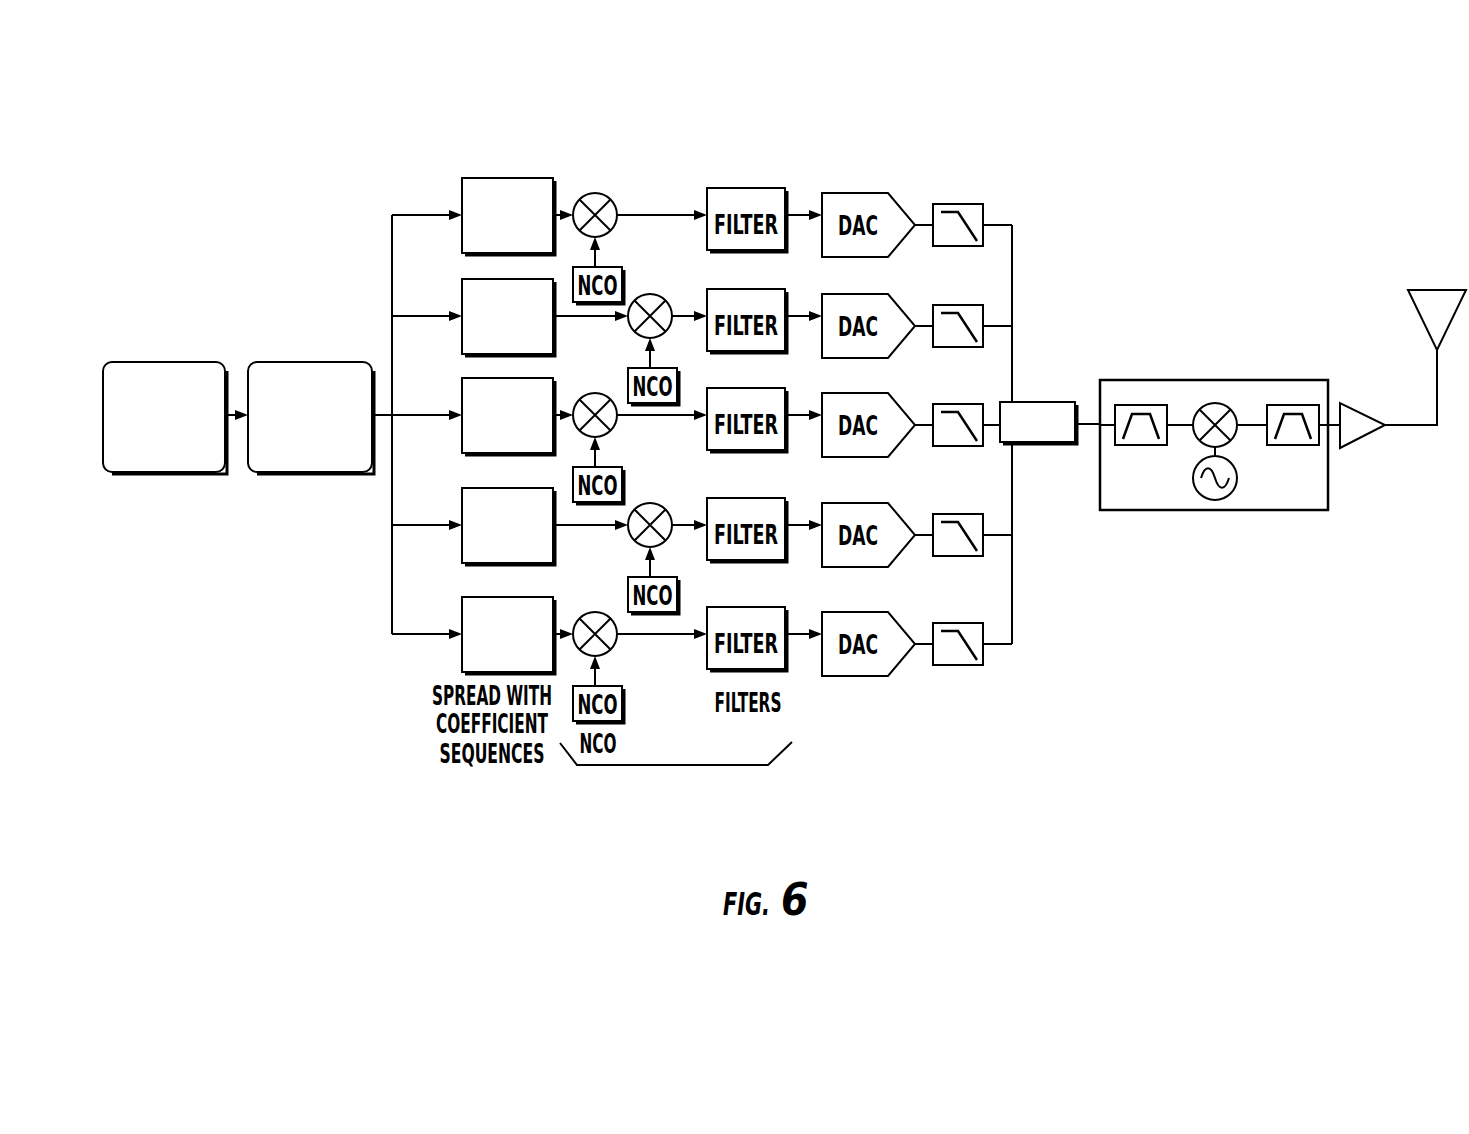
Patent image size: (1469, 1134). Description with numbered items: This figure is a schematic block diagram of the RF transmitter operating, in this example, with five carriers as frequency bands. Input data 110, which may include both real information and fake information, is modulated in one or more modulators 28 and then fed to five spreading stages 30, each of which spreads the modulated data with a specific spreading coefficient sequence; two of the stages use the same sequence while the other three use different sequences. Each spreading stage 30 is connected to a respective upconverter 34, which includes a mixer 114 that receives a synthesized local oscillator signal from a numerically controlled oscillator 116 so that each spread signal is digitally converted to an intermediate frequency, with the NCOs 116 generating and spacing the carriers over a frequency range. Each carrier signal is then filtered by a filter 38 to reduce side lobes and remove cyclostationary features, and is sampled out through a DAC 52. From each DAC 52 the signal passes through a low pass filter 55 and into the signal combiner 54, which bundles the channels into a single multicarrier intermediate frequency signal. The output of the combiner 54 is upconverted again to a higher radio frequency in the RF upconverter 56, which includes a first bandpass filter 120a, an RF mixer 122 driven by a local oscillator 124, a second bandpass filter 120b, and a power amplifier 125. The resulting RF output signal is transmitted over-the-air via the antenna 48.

The input data 110 is at (160, 362).
The modulator 28 is at (310, 362).
The spreading stage 30 is at (462, 195).
The mixer 114 is at (602, 196).
The numerically controlled oscillator 116 is at (608, 267).
The upconverter 34 is at (662, 159).
The filter 38 is at (757, 188).
The DAC 52 is at (858, 193).
The low pass filter 55 is at (958, 204).
The signal combiner 54 is at (1040, 402).
The RF upconverter 56 is at (1238, 448).
The first bandpass filter 120a is at (1135, 446).
The second bandpass filter 120b is at (1305, 446).
The RF mixer 122 is at (1228, 410).
The local oscillator 124 is at (1234, 487).
The power amplifier 125 is at (1352, 440).
The antenna 48 is at (1437, 296).